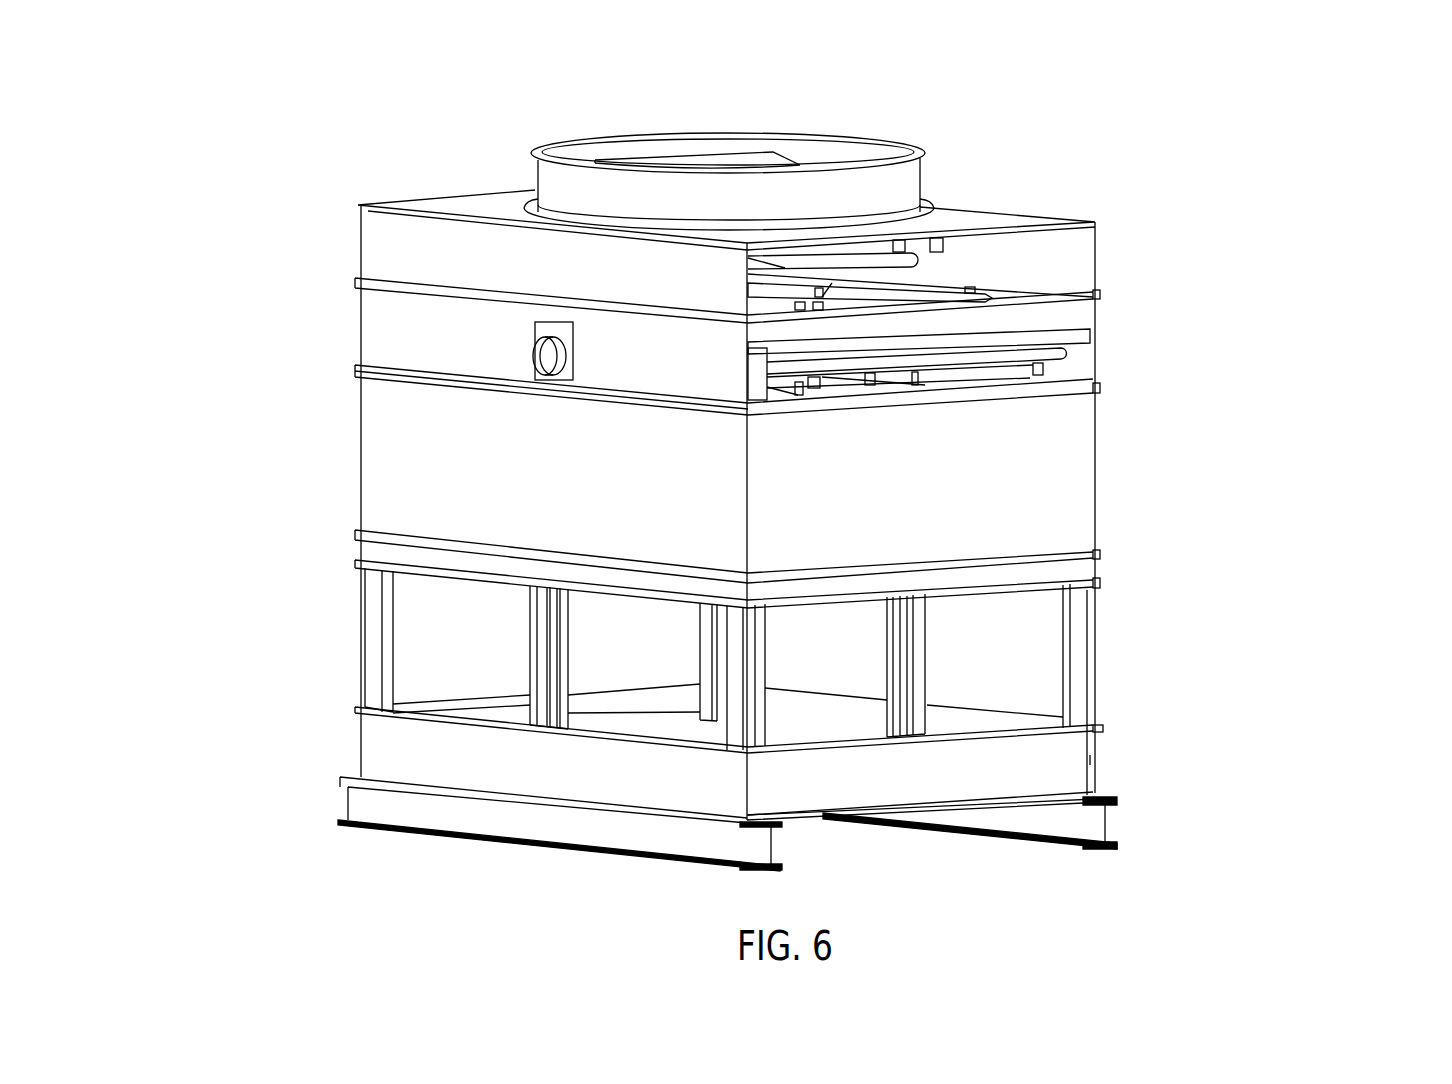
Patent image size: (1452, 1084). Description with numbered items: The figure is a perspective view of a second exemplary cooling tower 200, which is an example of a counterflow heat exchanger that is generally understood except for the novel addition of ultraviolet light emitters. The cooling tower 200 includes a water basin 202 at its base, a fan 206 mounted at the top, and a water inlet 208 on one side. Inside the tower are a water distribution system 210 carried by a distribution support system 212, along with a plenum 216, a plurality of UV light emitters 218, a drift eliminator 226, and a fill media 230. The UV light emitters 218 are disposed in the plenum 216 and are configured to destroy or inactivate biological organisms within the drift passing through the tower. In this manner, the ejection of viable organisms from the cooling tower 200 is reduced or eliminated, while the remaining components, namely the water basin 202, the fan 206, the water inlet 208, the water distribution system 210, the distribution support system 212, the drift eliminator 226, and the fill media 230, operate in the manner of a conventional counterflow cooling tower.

The cooling tower 200 is at (1142, 218).
The water basin 202 is at (932, 692).
The fan 206 is at (608, 122).
The water inlet 208 is at (533, 358).
The water distribution system 210 is at (1045, 368).
The distribution support system 212 is at (1035, 378).
The plenum 216 is at (993, 248).
The UV light emitters 218 is at (945, 297).
The drift eliminator 226 is at (1008, 328).
The fill media 230 is at (988, 403).